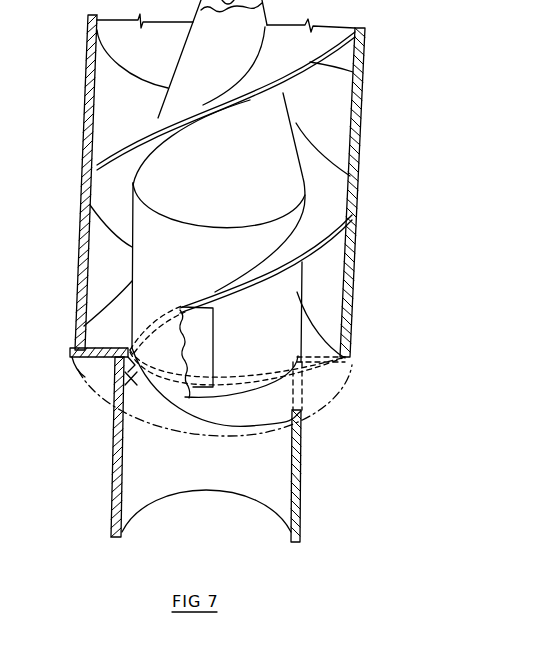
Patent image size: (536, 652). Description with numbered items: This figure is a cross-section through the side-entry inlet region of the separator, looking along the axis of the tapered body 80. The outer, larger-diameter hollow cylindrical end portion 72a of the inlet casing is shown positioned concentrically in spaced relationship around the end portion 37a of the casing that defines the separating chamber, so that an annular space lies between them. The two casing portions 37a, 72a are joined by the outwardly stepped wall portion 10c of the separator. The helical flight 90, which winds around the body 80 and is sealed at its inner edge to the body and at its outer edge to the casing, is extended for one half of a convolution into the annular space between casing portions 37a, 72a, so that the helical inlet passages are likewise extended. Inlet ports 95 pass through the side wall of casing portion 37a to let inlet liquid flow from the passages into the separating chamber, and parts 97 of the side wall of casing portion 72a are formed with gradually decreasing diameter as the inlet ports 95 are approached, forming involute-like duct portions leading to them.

The hollow cylindrical end portion 72a is at (362, 103).
The tapered body 80 is at (264, 123).
The helical flight 90 is at (365, 63).
The inlet port 95 is at (203, 358).
The outwardly stepped wall portion 10c is at (88, 375).
The side wall part 97 is at (128, 380).
The casing end portion 37a is at (313, 355).